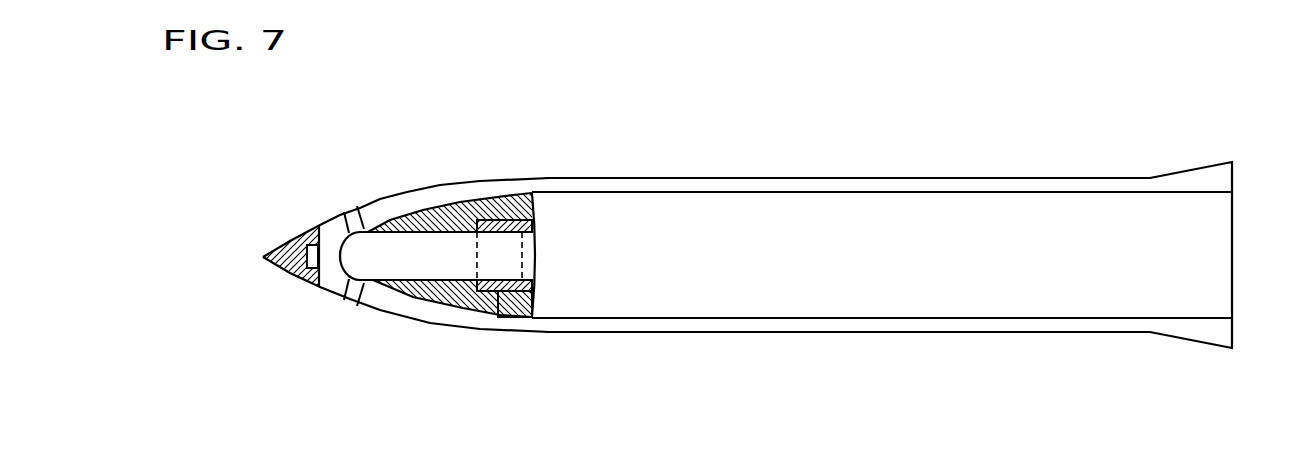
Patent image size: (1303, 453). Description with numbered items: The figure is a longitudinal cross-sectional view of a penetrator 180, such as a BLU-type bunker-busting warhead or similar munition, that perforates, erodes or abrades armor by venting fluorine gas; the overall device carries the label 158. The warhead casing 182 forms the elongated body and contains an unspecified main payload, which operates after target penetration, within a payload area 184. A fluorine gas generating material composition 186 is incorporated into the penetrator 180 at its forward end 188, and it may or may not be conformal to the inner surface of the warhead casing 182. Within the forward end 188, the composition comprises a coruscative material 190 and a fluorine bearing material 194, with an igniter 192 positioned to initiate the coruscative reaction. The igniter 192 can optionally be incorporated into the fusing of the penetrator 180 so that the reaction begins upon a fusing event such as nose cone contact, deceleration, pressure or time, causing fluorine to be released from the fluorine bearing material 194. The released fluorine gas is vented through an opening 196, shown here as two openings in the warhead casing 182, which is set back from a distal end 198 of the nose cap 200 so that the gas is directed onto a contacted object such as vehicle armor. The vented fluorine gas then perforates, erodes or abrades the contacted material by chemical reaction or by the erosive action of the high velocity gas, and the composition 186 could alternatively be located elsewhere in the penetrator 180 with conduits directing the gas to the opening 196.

The treatment device 158 is at (1045, 16).
The penetrator 180 is at (882, 206).
The warhead casing 182 is at (594, 188).
The payload area 184 is at (870, 268).
The fluorine gas generating material composition 186 is at (549, 257).
The forward end 188 is at (429, 217).
The coruscative material 190 is at (430, 295).
The igniter 192 is at (496, 312).
The fluorine bearing material 194 is at (428, 267).
The opening 196 is at (348, 217).
The distal end 198 is at (262, 258).
The nose cap 200 is at (296, 248).